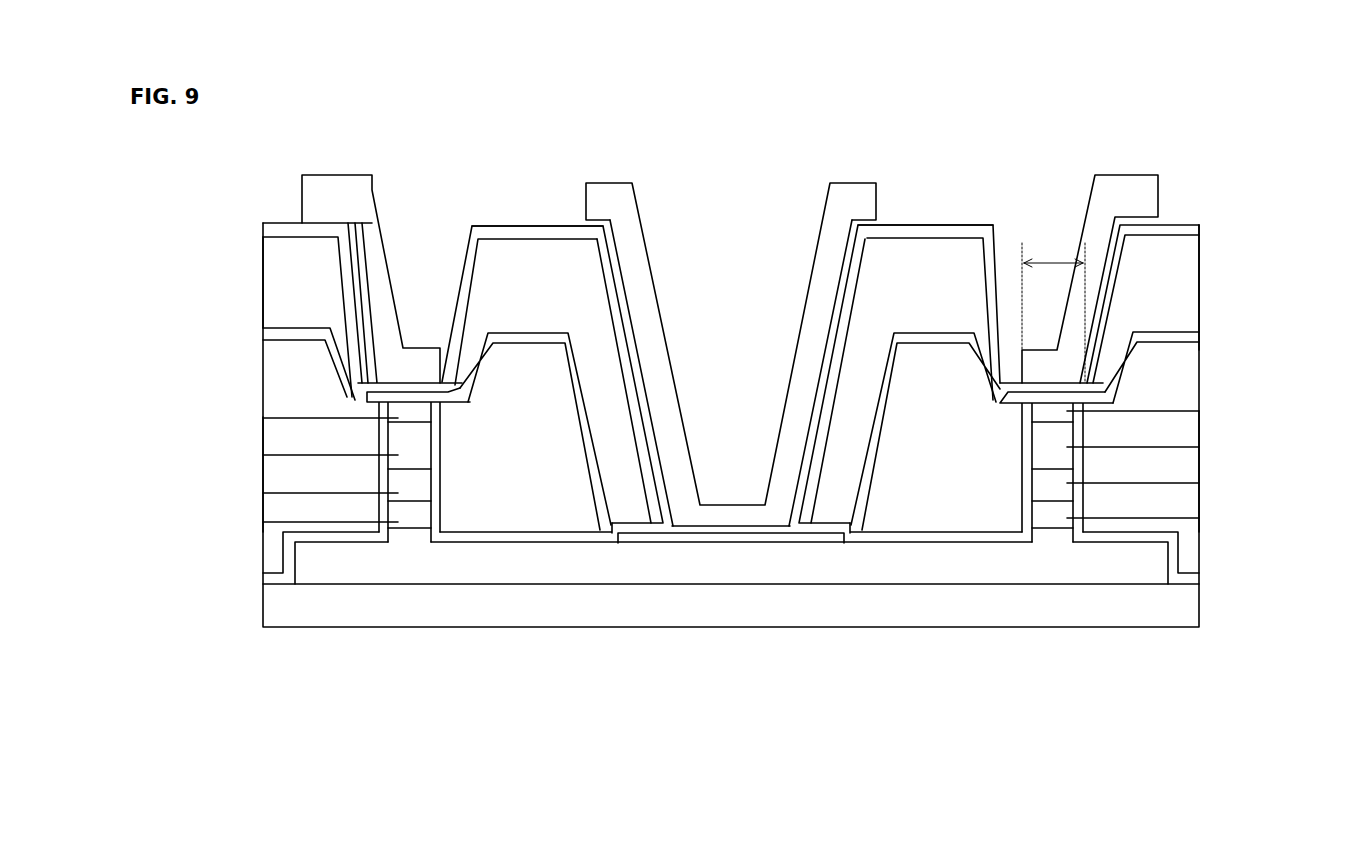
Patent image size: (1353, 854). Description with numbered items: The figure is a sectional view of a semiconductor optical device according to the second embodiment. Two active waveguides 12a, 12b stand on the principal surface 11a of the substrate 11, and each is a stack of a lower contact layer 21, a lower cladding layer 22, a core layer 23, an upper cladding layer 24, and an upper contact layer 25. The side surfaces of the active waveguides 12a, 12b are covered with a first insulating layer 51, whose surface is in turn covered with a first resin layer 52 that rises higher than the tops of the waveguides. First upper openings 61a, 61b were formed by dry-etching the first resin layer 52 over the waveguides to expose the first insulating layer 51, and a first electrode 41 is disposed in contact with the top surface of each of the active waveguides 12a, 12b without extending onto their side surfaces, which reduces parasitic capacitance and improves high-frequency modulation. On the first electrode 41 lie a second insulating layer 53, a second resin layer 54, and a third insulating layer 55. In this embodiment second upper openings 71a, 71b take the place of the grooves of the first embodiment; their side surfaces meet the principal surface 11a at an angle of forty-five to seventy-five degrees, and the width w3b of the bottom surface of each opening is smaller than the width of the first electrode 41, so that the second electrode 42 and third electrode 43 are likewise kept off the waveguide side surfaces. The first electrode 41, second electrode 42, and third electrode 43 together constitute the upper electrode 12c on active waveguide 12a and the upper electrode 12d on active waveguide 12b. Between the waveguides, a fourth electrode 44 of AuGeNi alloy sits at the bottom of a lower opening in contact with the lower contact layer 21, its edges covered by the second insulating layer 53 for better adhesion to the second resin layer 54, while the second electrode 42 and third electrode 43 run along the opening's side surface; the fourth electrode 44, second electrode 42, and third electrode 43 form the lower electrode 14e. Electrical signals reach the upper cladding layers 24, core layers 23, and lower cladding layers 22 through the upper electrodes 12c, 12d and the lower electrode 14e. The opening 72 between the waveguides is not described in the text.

The substrate 11 is at (1142, 601).
The principal surface 11a is at (1025, 585).
The active waveguide 12a is at (204, 408).
The active waveguide 12b is at (1275, 400).
The upper electrode 12c is at (463, 45).
The upper electrode 12d is at (1247, 175).
The lower electrode 14e is at (730, 115).
The lower contact layer 21 is at (307, 567).
The lower cladding layer 22 is at (263, 522).
The core layer 23 is at (263, 493).
The upper cladding layer 24 is at (263, 455).
The upper contact layer 25 is at (263, 418).
The first electrode 41 is at (387, 393).
The second electrode 42 is at (403, 348).
The third electrode 43 is at (345, 370).
The fourth electrode 44 is at (692, 540).
The first insulating layer 51 is at (380, 412).
The first resin layer 52 is at (373, 407).
The second insulating layer 53 is at (283, 355).
The second resin layer 54 is at (275, 278).
The third insulating layer 55 is at (273, 230).
The first upper opening 61a is at (487, 372).
The first upper opening 61b is at (975, 368).
The second upper opening 71a is at (340, 345).
The second upper opening 71b is at (1012, 383).
The third opening 72 is at (560, 390).
The width of bottom surface of second upper opening w3b is at (1053, 308).